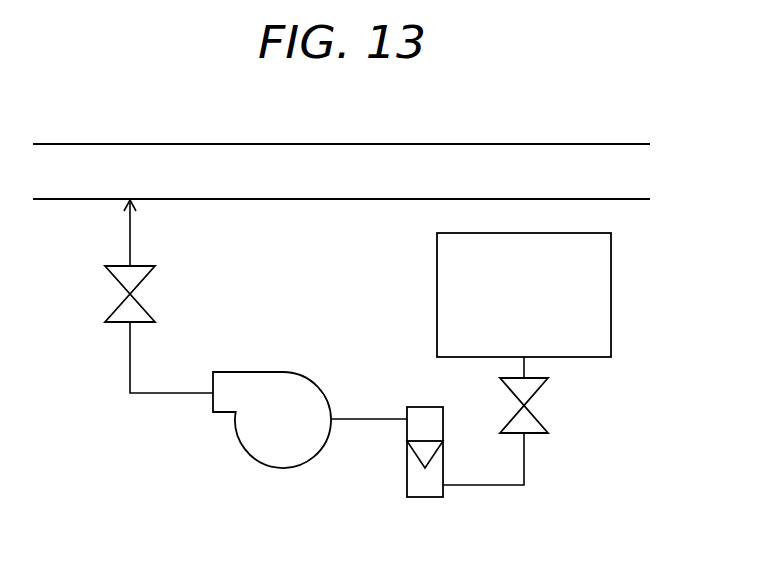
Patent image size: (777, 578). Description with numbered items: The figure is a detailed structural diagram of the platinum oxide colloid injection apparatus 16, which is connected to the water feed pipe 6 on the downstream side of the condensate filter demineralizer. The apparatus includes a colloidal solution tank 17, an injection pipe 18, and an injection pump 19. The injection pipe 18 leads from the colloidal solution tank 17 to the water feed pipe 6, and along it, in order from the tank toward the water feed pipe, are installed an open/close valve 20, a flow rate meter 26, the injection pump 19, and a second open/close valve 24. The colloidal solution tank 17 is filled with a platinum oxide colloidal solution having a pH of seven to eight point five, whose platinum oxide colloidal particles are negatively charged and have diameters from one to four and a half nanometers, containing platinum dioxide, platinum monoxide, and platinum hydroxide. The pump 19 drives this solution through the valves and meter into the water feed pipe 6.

The water feed pipe 6 is at (503, 144).
The platinum oxide colloid injection apparatus 16 is at (172, 481).
The colloidal solution tank 17 is at (611, 290).
The injection pipe 18 is at (500, 486).
The injection pump 19 is at (292, 467).
The open/close valve 20 is at (536, 420).
The open/close valve 24 is at (138, 303).
The flow rate meter 26 is at (425, 498).